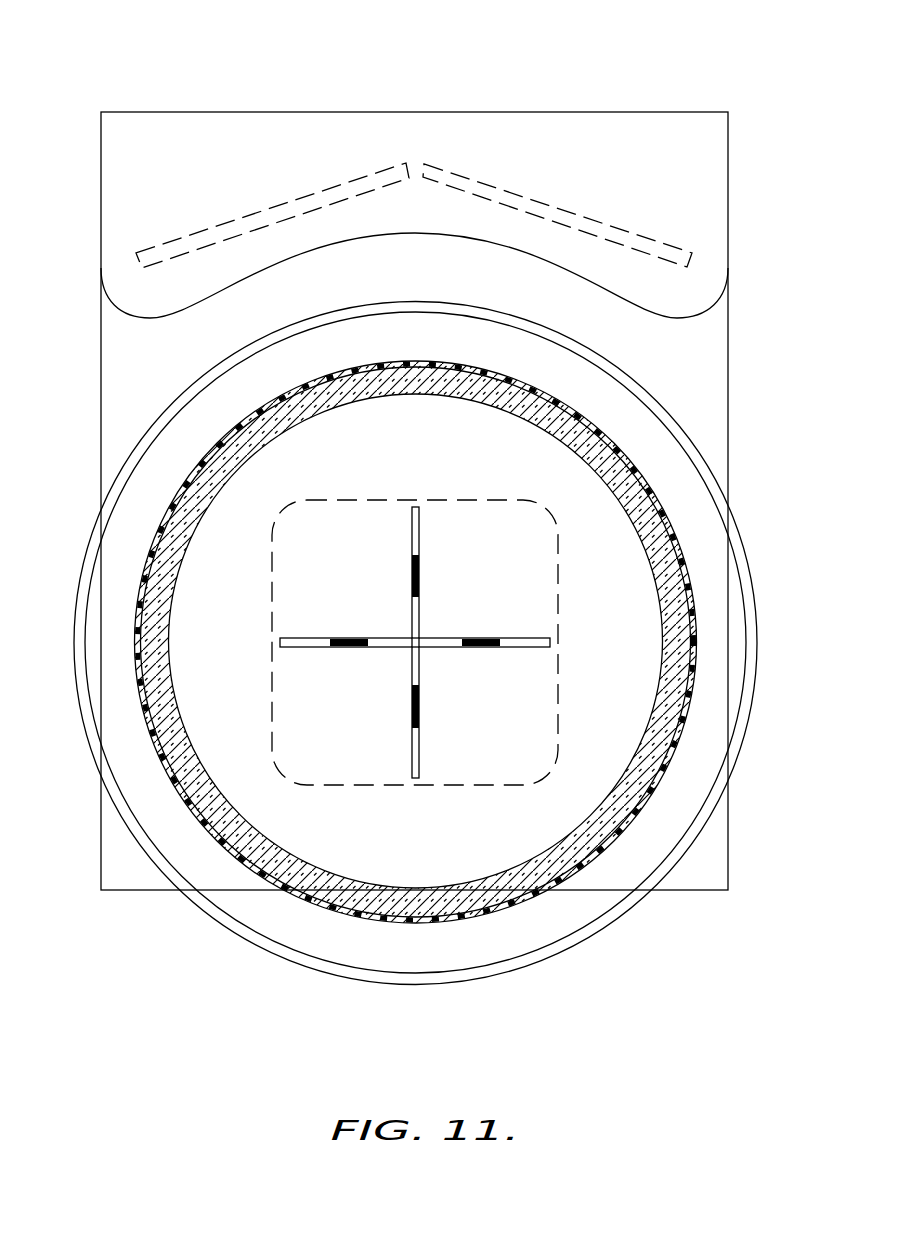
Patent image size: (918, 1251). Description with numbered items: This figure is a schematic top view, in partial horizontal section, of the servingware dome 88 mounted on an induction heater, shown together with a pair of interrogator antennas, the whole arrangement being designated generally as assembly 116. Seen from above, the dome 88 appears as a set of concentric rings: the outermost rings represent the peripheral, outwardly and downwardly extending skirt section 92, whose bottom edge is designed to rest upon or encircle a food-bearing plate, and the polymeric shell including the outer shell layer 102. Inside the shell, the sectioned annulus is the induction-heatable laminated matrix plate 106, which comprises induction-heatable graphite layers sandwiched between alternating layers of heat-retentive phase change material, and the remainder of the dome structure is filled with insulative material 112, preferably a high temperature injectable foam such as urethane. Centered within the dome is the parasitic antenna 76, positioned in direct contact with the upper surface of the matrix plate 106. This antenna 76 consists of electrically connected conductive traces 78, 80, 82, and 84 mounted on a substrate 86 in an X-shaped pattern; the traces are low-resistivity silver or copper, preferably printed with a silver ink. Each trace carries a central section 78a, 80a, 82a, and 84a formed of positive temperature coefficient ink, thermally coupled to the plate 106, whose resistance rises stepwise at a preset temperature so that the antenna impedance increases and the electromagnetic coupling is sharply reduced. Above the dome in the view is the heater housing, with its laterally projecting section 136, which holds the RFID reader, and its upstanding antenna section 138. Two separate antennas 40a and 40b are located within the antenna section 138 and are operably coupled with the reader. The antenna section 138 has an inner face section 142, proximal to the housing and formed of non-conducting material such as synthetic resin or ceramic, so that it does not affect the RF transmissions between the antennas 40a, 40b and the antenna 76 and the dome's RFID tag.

The cell culture vessel / plate 116 is at (589, 83).
The upstanding antenna section 138 is at (715, 210).
The laterally projecting section 136 is at (692, 358).
The inner face section 142 is at (382, 236).
The antenna 40a is at (298, 201).
The antenna 40b is at (533, 200).
The servingware dome 88 is at (151, 402).
The skirt section 92 is at (620, 927).
The outer shell layer 102 is at (690, 714).
The induction-heatable laminated matrix plate 106 is at (416, 420).
The insulative material 112 is at (356, 893).
The parasitic antenna 76 is at (570, 581).
The substrate 86 is at (289, 570).
The conductive trace 78 is at (418, 527).
The central section 78a is at (419, 567).
The conductive trace 82 is at (418, 757).
The central section 82a is at (412, 710).
The conductive trace 84 is at (297, 648).
The central section 84a is at (362, 637).
The conductive trace 80 is at (530, 640).
The central section 80a is at (482, 648).